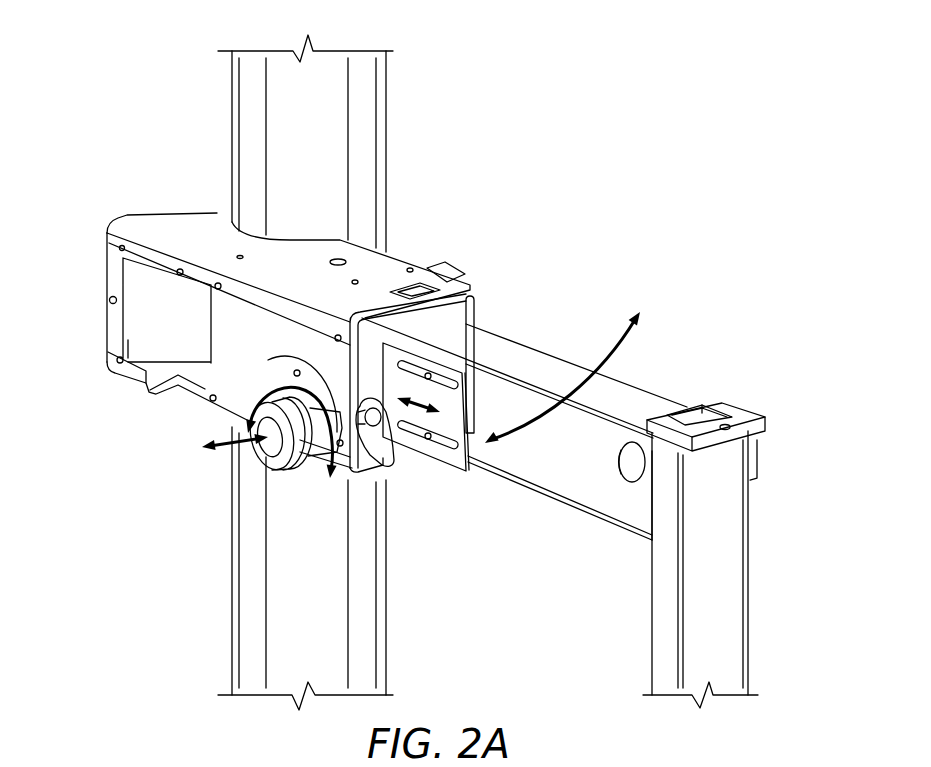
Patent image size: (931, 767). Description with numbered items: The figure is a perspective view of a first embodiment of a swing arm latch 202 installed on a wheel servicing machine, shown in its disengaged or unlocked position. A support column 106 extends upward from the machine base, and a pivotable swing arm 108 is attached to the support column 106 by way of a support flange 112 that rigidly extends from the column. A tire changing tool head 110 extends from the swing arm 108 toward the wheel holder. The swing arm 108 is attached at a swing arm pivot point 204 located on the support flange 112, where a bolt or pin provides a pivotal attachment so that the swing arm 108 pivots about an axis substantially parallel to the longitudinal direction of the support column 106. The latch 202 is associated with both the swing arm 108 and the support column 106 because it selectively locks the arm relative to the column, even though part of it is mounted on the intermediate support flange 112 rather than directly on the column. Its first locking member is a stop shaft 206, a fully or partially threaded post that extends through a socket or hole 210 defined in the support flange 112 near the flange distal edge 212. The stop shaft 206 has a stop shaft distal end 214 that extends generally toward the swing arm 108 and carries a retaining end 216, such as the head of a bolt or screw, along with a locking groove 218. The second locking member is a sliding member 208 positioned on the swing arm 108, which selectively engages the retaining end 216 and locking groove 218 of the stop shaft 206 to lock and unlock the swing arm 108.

The support column 106 is at (387, 97).
The swing arm 108 is at (628, 383).
The tire changing tool head 110 is at (748, 571).
The support flange 112 is at (120, 222).
The latch 202 is at (410, 522).
The swing arm pivot point 204 is at (340, 258).
The stop shaft 206 is at (268, 455).
The sliding member 208 is at (468, 470).
The hole 210 is at (300, 366).
The flange distal edge 212 is at (350, 343).
The stop shaft distal end 214 is at (370, 425).
The retaining end 216 is at (387, 463).
The locking groove 218 is at (370, 473).